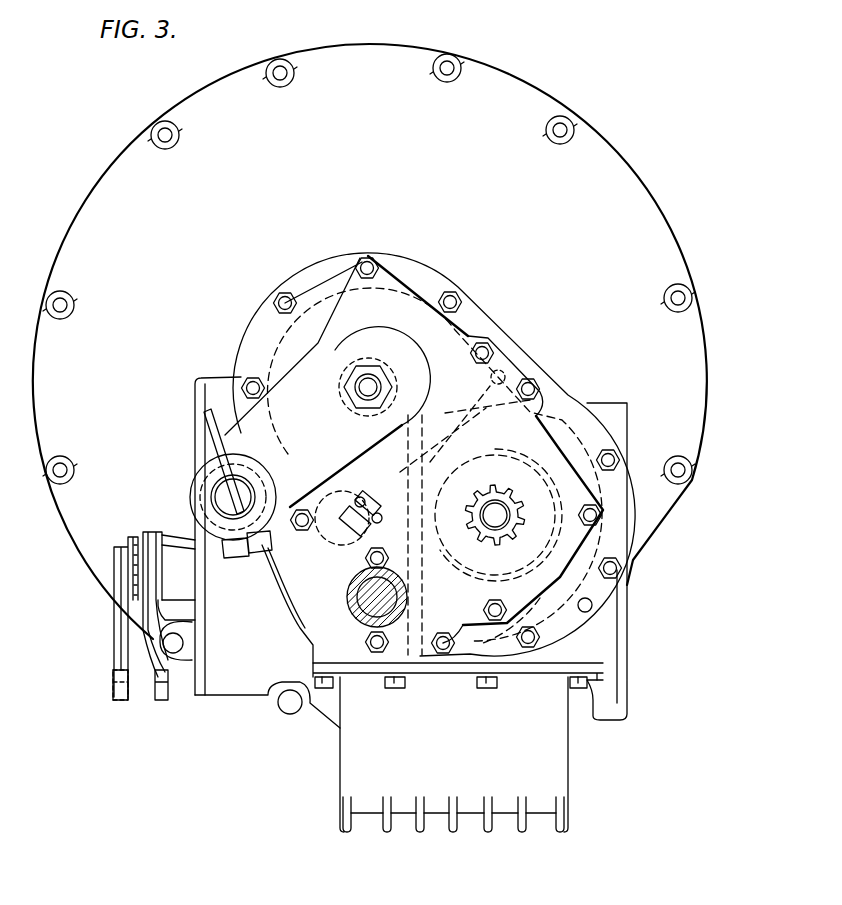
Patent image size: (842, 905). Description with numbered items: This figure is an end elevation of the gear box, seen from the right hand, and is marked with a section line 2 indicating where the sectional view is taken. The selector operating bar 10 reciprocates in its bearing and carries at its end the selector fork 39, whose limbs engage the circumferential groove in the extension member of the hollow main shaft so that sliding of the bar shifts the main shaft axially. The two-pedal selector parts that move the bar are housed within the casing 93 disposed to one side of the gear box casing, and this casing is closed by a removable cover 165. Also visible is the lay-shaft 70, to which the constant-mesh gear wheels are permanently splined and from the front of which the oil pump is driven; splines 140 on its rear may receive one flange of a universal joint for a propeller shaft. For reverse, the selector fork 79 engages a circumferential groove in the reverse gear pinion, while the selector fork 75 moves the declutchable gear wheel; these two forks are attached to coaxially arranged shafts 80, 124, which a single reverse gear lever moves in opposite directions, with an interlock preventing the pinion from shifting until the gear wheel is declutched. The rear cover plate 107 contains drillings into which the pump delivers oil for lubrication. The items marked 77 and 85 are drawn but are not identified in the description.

The section line 2- 2 is at (270, 260).
The selector operating bar 10 is at (222, 490).
The selector fork 39 is at (320, 398).
The lay-shaft 70 is at (503, 513).
The selector fork 75 is at (533, 603).
The housing wall 77 is at (357, 580).
The selector fork 79 is at (335, 560).
The shaft 80 is at (368, 660).
The bracket 85 is at (625, 532).
The casing 93 is at (226, 380).
The rear cover plate 107 is at (473, 308).
The shaft 124 is at (362, 618).
The splines 140 is at (505, 490).
The removable cover 165 is at (196, 445).